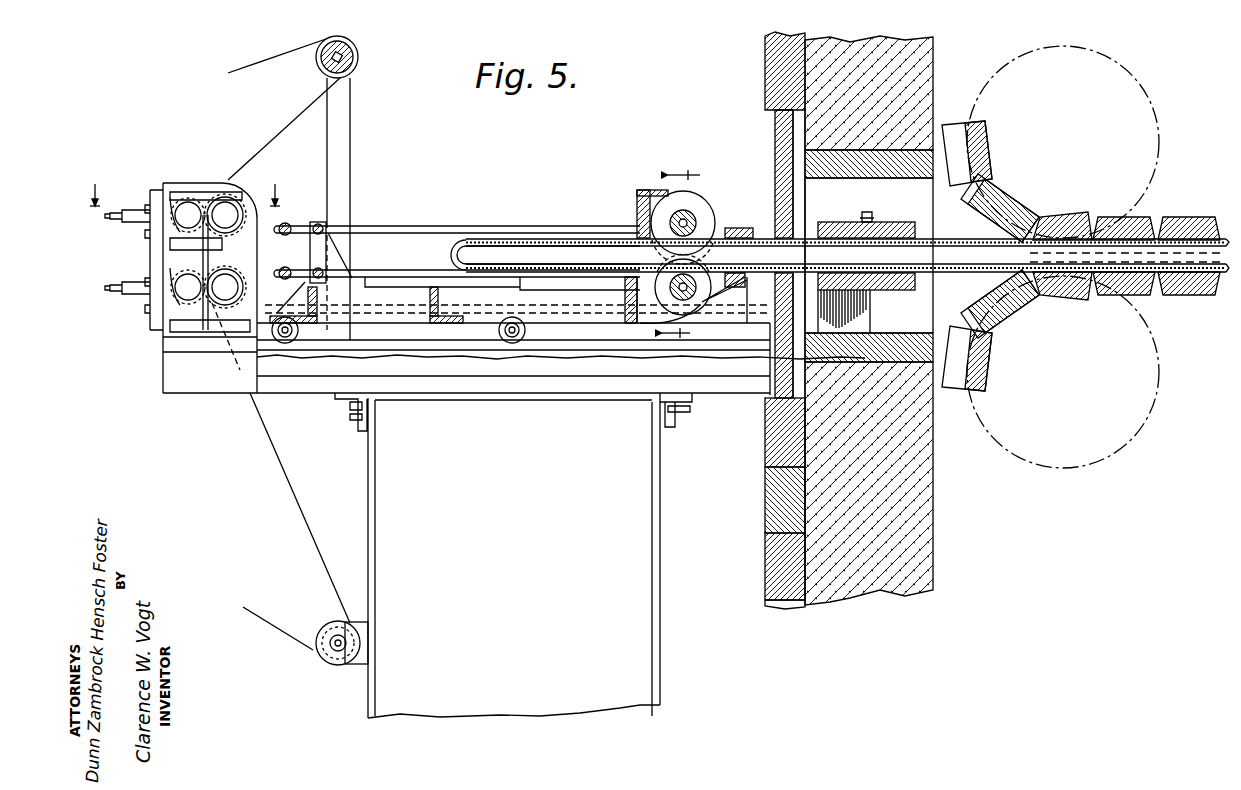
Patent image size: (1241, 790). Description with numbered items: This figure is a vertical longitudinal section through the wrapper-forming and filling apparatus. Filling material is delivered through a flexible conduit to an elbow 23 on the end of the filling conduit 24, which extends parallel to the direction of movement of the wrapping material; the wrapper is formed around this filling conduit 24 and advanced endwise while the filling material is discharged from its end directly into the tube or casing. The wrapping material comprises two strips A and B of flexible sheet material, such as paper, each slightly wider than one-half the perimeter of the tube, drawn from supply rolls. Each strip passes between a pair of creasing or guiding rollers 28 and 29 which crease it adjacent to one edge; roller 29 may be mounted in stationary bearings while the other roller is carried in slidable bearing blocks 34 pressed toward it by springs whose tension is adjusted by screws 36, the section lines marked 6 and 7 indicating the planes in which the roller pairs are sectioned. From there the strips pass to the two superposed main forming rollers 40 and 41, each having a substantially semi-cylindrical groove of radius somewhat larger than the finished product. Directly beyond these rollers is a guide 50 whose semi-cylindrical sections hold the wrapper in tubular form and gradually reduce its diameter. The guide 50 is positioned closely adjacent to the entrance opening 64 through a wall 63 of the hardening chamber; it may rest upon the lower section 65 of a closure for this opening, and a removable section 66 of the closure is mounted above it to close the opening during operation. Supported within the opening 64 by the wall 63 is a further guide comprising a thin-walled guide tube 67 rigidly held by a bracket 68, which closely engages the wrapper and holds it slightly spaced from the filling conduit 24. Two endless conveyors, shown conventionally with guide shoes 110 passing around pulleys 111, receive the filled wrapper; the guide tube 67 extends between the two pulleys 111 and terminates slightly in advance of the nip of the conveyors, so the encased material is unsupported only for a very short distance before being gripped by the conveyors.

The strip A is at (262, 62).
The strip B is at (290, 480).
The section line 6- 6 is at (185, 194).
The section line 7- 7 is at (687, 242).
The elbow 23 is at (468, 238).
The filling conduit 24 is at (575, 238).
The creasing or guiding roller 28 is at (188, 212).
The creasing or guiding roller 29 is at (226, 212).
The bearing block 34 is at (170, 190).
The screw 36 is at (124, 216).
The main forming roller 40 is at (690, 213).
The main forming roller 41 is at (703, 303).
The guide 50 is at (738, 228).
The wall 63 is at (922, 530).
The entrance opening 64 is at (869, 255).
The lower section of closure 65 is at (768, 382).
The removable section of closure 66 is at (785, 132).
The guide tube 67 is at (958, 242).
The bracket 68 is at (890, 222).
The guide shoe 110 is at (990, 146).
The pulley 111 is at (1005, 64).